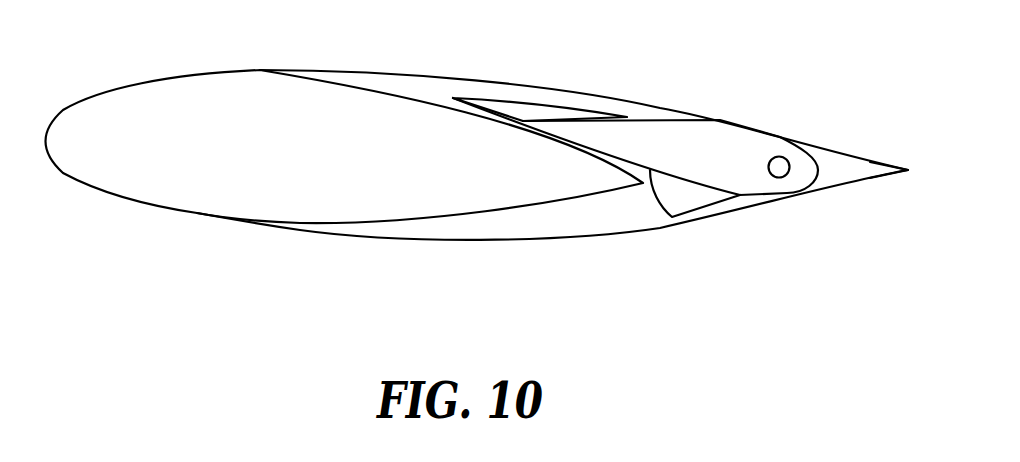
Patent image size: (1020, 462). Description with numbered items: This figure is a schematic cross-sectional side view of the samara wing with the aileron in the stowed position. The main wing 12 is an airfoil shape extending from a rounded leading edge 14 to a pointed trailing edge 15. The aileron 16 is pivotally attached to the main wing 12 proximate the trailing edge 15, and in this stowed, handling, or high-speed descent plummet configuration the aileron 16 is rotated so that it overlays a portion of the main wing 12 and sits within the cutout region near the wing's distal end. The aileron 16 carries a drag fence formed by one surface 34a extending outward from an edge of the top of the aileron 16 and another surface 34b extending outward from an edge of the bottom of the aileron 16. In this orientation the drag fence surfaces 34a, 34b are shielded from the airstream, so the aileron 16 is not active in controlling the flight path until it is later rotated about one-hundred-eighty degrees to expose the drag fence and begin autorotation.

The leading edge 14 is at (68, 127).
The main wing 12 is at (250, 130).
The aileron 16 is at (683, 143).
The surface 34b is at (515, 110).
The surface 34a is at (693, 200).
The trailing edge 15 is at (910, 172).